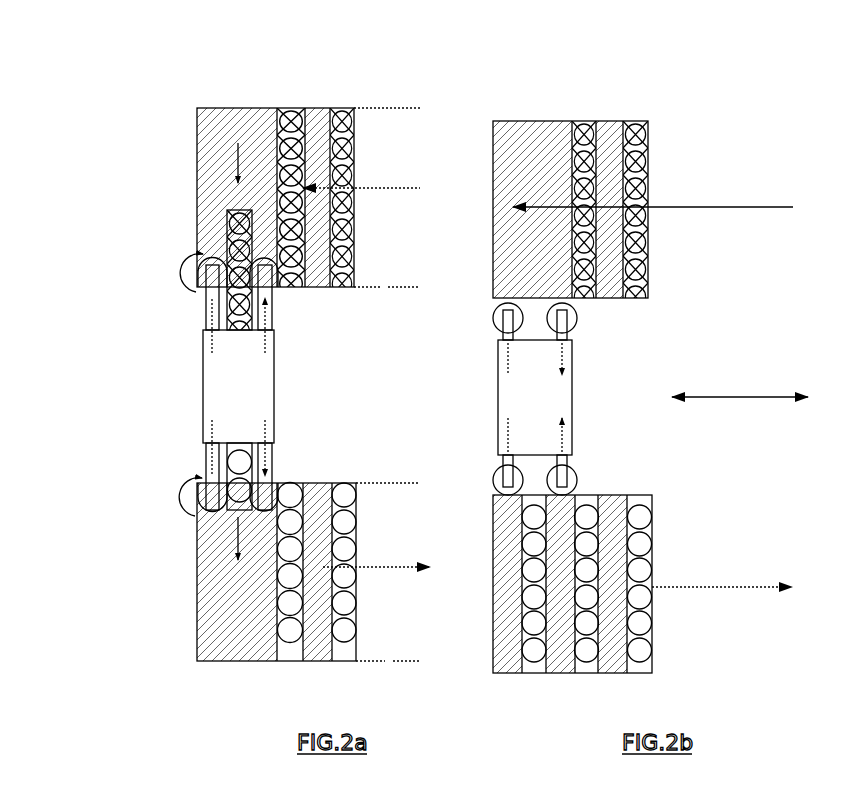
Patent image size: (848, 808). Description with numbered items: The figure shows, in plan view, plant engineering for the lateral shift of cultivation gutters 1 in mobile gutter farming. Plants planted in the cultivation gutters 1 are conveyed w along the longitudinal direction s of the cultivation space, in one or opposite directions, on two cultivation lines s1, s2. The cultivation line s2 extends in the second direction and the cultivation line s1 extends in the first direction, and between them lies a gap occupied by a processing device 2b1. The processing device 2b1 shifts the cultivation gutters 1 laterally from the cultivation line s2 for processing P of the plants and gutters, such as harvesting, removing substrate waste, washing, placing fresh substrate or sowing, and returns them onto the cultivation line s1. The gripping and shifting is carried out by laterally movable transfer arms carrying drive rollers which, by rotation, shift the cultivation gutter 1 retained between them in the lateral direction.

In FIG. 2a, the cultivation gutter 1 is at (293, 346).
In FIG. 2b, the cultivation gutter 1 is at (568, 411).
In FIG. 2a, the conveying direction w is at (398, 182).
In FIG. 2b, the conveying direction w is at (741, 200).
In FIG. 2a, the processing device 2b1 is at (192, 370).
In FIG. 2b, the processing device 2b1 is at (578, 428).
In FIG. 2a, the processing P is at (195, 405).
In FIG. 2b, the longitudinal direction of the cultivation space s is at (745, 392).
In FIG. 2b, the cultivation line extending in the first direction s1 is at (663, 525).
In FIG. 2b, the cultivation line extending in the second direction s2 is at (656, 135).